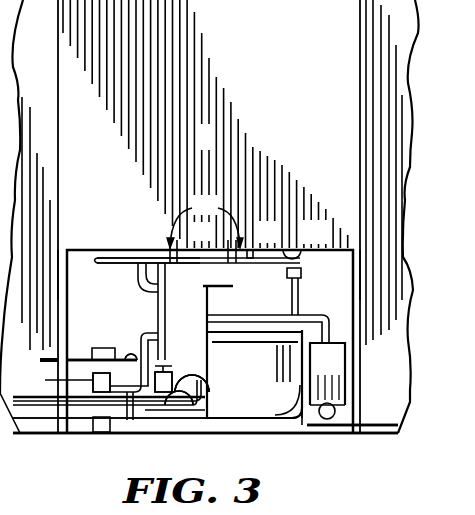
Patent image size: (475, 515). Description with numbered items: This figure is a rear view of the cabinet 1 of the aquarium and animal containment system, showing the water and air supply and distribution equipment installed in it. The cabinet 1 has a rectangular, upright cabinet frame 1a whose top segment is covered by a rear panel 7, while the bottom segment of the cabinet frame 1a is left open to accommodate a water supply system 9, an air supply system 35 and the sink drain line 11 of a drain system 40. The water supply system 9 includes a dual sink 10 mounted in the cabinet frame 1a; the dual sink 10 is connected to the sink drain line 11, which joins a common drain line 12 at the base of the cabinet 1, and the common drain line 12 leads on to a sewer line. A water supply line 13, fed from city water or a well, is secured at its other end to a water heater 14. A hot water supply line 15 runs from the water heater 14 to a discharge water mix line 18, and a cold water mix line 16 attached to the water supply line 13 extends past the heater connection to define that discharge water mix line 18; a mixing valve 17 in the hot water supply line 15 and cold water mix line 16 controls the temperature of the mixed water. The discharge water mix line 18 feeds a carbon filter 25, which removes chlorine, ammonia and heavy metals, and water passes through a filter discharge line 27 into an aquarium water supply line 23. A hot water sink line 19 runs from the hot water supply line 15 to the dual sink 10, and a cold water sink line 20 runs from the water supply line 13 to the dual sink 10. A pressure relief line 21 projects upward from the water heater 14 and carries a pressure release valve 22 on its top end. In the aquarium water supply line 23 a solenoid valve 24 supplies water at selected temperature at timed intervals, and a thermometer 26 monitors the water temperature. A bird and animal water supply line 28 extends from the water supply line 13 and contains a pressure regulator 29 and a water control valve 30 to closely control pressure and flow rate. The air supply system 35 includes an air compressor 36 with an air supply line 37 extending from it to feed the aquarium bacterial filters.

The cabinet 1 is at (86, 442).
The cabinet frame 1a is at (58, 262).
The rear panel 7 is at (213, 148).
The water supply system 9 is at (85, 283).
The dual sink 10 is at (205, 222).
The sink drain line 11 is at (188, 248).
The common drain line 12 is at (340, 430).
The water supply line 13 is at (297, 388).
The water heater 14 is at (333, 371).
The hot water supply line 15 is at (330, 332).
The cold water mix line 16 is at (281, 373).
The mixing valve 17 is at (280, 355).
The discharge water mix line 18 is at (142, 334).
The hot water sink line 19 is at (250, 247).
The cold water sink line 20 is at (150, 259).
The pressure relief line 21 is at (303, 298).
The pressure release valve 22 is at (292, 248).
The aquarium water supply line 23 is at (54, 357).
The solenoid valve 24 is at (98, 347).
The carbon filter 25 is at (58, 380).
The thermometer 26 is at (130, 352).
The filter discharge line 27 is at (93, 360).
The bird and animal water supply line 28 is at (180, 370).
The pressure regulator 29 is at (180, 387).
The water control valve 30 is at (163, 362).
The air supply system 35 is at (338, 385).
The air compressor 36 is at (340, 408).
The air supply line 37 is at (308, 414).
The drain system 40 is at (185, 440).